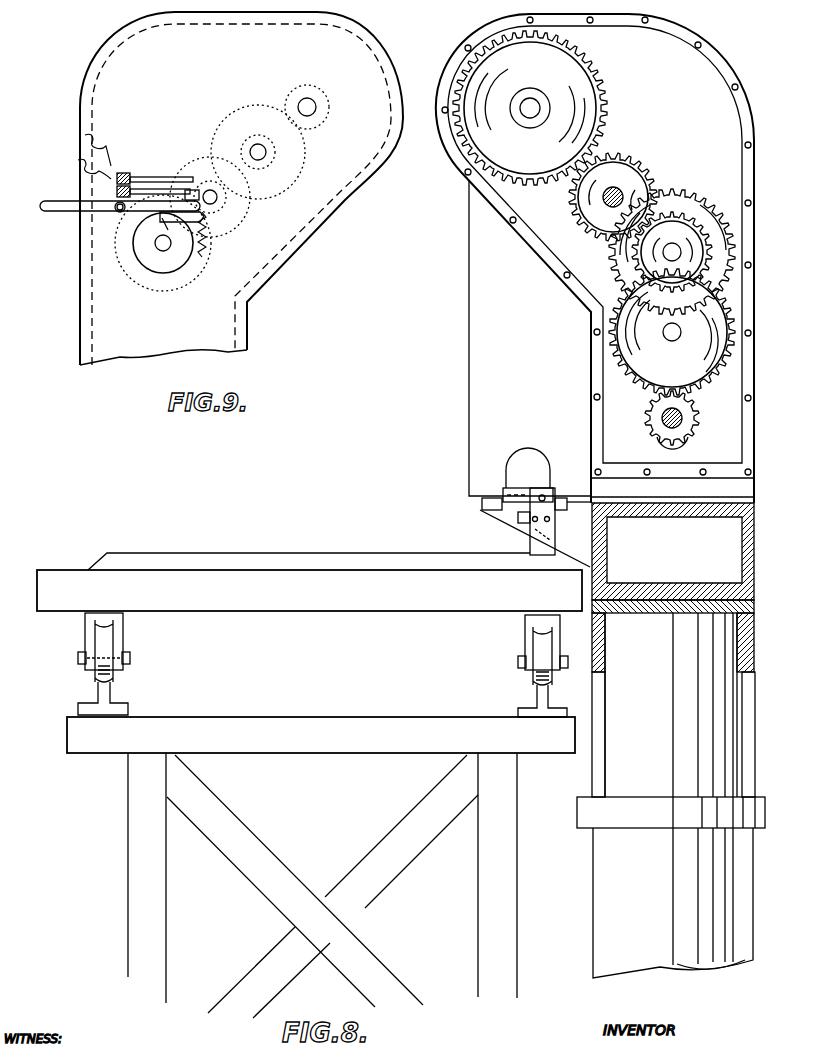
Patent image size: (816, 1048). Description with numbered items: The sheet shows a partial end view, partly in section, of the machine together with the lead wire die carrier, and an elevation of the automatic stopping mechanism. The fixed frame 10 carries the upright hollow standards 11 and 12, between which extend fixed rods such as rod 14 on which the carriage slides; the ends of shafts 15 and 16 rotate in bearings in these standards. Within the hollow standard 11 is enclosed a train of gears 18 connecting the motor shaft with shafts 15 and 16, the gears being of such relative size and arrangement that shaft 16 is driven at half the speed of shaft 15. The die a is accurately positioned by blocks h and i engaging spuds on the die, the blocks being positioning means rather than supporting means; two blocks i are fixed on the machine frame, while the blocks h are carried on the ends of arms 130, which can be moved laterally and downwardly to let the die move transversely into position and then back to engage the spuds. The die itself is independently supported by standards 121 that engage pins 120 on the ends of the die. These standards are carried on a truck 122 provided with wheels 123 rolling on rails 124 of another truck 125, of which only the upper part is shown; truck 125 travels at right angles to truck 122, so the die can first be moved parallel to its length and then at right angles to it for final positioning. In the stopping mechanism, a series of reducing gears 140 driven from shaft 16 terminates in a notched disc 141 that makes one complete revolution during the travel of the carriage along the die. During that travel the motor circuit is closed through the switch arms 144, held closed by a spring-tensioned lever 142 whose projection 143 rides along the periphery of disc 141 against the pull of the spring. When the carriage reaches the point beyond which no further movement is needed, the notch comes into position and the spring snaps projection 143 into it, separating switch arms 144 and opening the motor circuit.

In FIG. 8, the fixed frame 10 is at (671, 740).
In FIG. 8, the upright hollow standard 11 is at (722, 58).
In FIG. 9, the upright hollow standard 12 is at (118, 58).
In FIG. 8, the fixed rod 14 is at (672, 359).
In FIG. 8, the shaft 15 is at (668, 253).
In FIG. 8, the shaft 16 is at (535, 108).
In FIG. 9, the shaft 16 is at (318, 107).
In FIG. 8, the train of gears 18 is at (683, 190).
In FIG. 8, the pin 120 is at (546, 491).
In FIG. 8, the standard 121 is at (537, 553).
In FIG. 8, the truck 122 is at (270, 571).
In FIG. 8, the wheel 123 is at (103, 654).
In FIG. 8, the rail 124 is at (110, 698).
In FIG. 8, the truck 125 is at (321, 852).
In FIG. 8, the arm 130 is at (518, 535).
In FIG. 8, the die a is at (510, 490).
In FIG. 8, the block h is at (485, 510).
In FIG. 8, the block i is at (558, 504).
In FIG. 9, the reducing gears 140 is at (225, 122).
In FIG. 9, the notched wheel or disc 141 is at (157, 267).
In FIG. 9, the spring-tensioned lever 142 is at (65, 211).
In FIG. 9, the projection 143 is at (162, 218).
In FIG. 9, the switch arms 144 is at (157, 187).